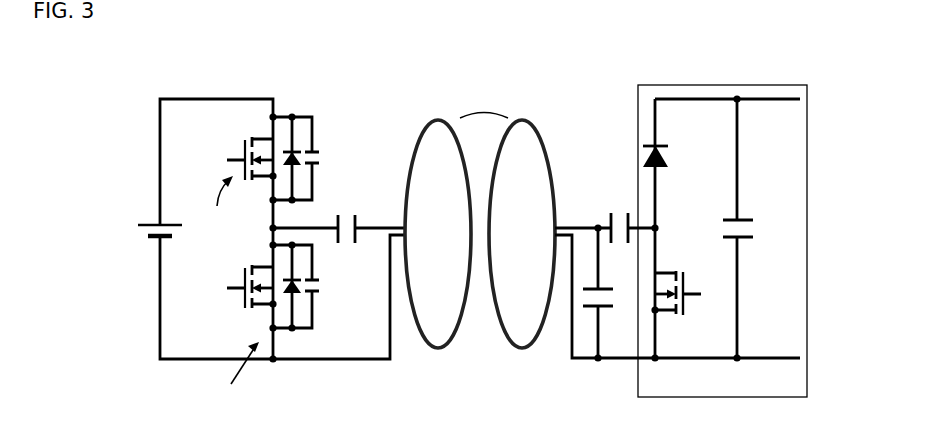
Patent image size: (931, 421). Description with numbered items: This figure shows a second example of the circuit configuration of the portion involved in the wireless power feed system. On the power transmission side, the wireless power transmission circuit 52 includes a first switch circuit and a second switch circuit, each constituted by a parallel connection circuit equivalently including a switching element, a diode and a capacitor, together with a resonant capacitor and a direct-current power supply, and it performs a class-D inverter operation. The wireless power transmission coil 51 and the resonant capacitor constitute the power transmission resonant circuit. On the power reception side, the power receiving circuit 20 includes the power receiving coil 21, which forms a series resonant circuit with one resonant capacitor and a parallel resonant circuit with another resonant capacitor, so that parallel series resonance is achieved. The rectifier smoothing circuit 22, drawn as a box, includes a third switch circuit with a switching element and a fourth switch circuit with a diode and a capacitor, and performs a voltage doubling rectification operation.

The wireless power transmission circuit 52 is at (150, 75).
The wireless power transmission coil 51 is at (438, 120).
The power receiving coil 21 is at (522, 120).
The power receiving circuit 20 is at (778, 78).
The rectifier smoothing circuit 22 is at (807, 85).